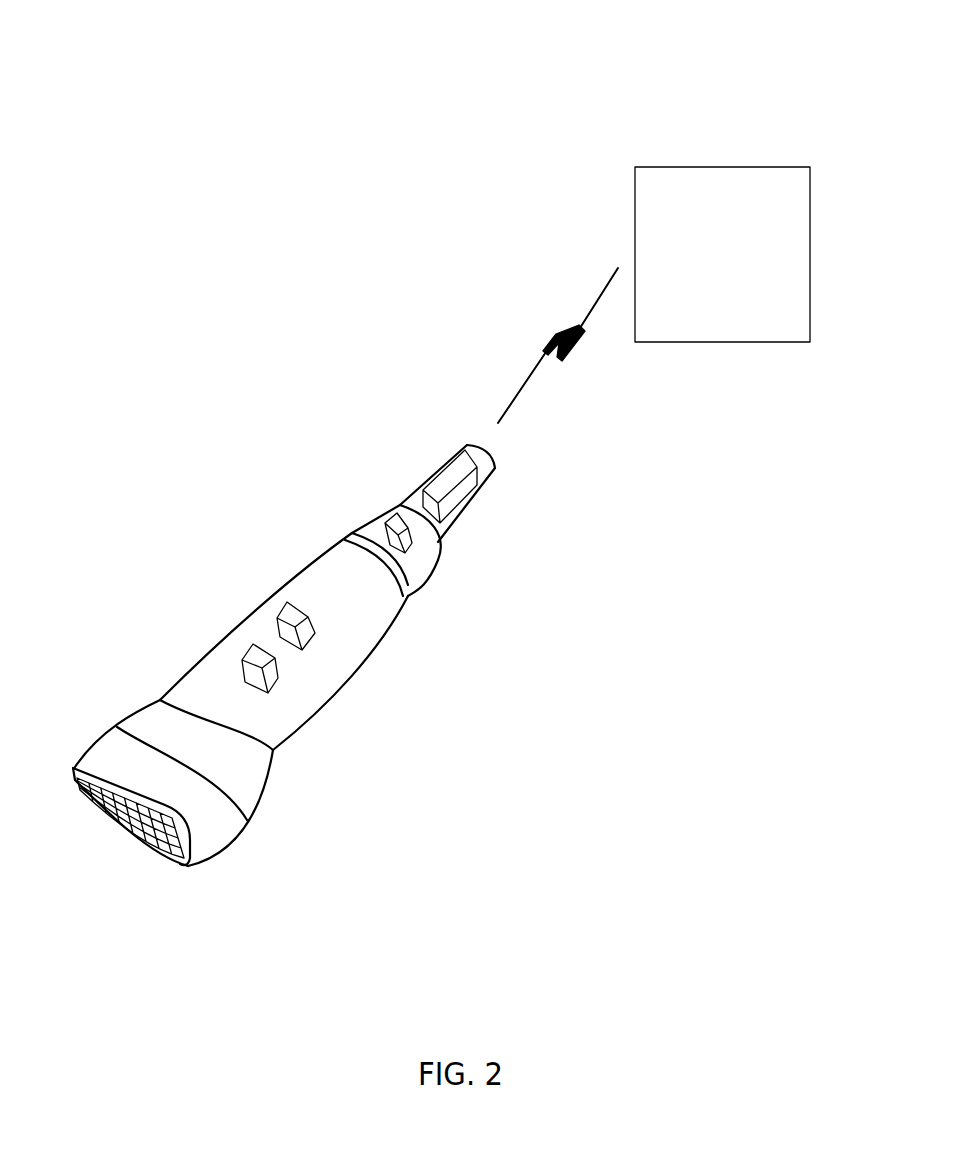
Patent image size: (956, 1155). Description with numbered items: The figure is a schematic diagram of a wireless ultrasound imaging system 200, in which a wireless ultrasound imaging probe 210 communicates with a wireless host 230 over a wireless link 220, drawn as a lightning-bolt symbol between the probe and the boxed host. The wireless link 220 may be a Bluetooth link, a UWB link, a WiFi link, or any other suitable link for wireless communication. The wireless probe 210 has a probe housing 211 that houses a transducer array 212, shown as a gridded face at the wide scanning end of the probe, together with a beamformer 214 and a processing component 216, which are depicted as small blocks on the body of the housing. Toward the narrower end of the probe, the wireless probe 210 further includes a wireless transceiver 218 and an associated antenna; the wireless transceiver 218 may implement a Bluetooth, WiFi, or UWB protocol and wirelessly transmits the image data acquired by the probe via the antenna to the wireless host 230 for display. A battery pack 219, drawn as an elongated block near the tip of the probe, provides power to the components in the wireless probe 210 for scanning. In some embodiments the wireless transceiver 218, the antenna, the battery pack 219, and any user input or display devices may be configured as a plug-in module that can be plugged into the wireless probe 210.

The wireless ultrasound imaging system 200 is at (695, 87).
The wireless ultrasound imaging probe 210 is at (376, 796).
The probe housing 211 is at (344, 655).
The transducer array 212 is at (97, 818).
The beamformer 214 is at (250, 648).
The processing component 216 is at (282, 604).
The wireless transceiver 218 is at (390, 513).
The battery pack 219 is at (437, 470).
The wireless link 220 is at (580, 332).
The wireless host 230 is at (740, 281).